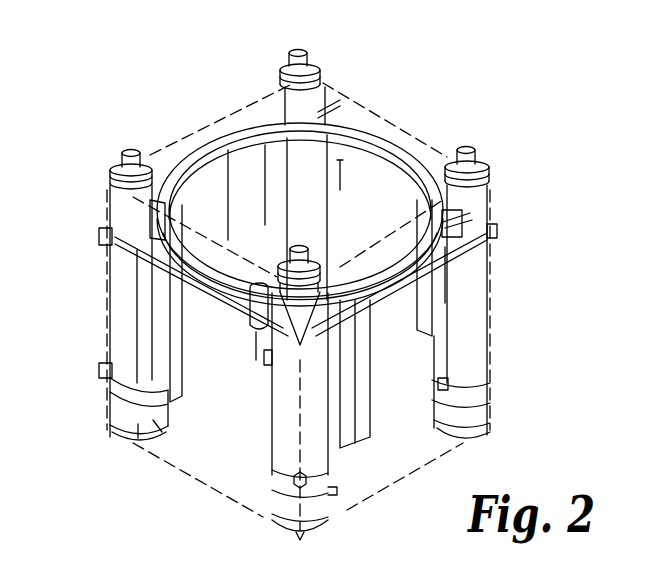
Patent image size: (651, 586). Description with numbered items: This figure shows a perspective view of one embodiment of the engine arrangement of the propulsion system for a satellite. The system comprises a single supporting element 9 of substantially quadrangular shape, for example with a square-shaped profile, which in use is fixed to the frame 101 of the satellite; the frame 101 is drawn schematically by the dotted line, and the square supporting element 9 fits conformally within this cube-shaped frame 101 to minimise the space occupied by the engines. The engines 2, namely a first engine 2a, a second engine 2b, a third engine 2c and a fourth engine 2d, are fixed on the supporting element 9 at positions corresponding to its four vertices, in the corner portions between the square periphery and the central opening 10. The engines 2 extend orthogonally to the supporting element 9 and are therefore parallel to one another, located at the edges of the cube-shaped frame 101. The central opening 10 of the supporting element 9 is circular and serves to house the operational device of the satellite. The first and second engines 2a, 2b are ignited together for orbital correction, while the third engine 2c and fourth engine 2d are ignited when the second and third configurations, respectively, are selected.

The frame 101 is at (350, 105).
The central opening 10 is at (206, 158).
The supporting element 9 is at (390, 137).
The engines 2 is at (303, 293).
The first engine 2a is at (117, 330).
The second engine 2b is at (287, 192).
The third engine 2c is at (494, 343).
The fourth engine 2d is at (317, 410).